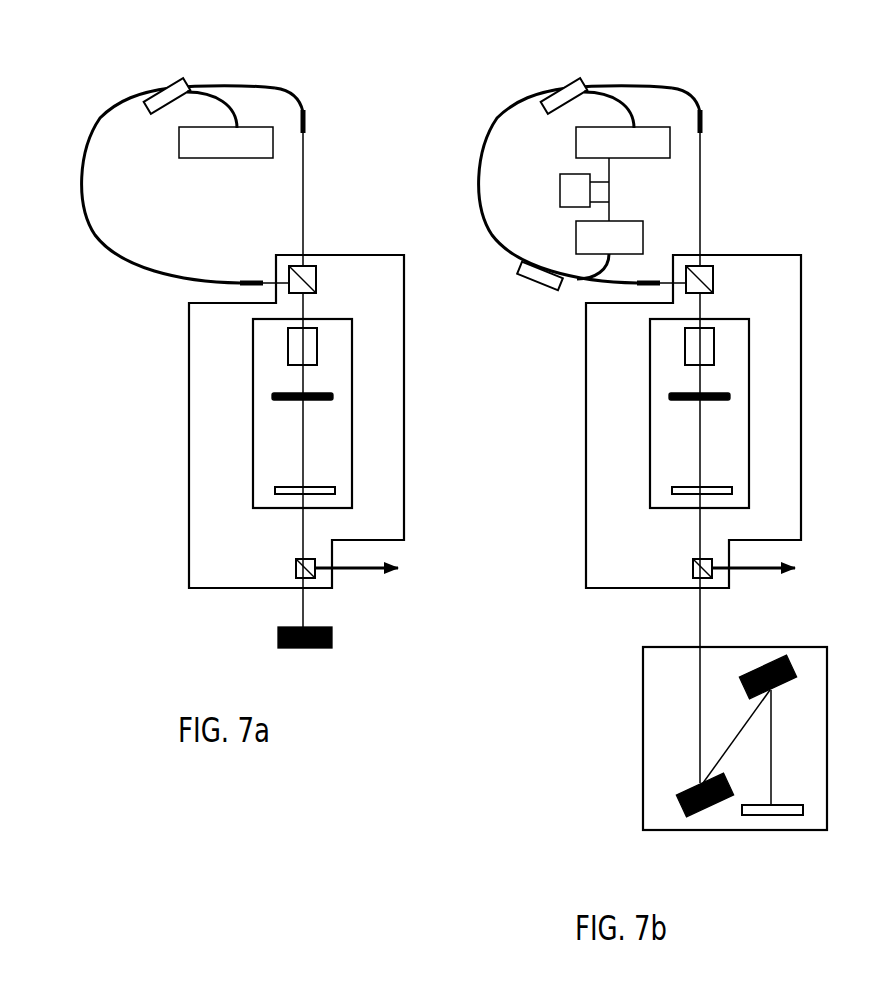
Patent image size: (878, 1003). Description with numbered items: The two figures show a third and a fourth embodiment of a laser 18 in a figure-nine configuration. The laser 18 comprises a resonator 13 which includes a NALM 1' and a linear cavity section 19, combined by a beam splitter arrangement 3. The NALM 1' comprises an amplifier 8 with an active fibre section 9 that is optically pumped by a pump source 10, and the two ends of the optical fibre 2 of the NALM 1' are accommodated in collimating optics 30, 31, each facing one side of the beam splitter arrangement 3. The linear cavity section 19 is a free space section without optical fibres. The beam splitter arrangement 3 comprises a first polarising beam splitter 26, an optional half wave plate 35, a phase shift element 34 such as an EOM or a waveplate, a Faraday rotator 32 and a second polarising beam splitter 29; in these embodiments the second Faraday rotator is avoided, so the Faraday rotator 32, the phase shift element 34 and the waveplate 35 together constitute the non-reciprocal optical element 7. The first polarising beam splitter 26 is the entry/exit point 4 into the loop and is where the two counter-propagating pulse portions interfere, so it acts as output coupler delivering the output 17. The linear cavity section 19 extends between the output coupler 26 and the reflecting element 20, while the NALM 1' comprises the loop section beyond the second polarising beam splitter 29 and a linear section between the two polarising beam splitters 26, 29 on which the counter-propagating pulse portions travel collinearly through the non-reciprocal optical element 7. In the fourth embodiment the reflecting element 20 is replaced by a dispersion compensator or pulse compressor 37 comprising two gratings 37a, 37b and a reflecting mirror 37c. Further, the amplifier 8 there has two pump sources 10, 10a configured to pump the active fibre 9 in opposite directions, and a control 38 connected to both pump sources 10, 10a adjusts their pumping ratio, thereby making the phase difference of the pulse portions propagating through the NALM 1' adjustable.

In FIG. 7a, the NALM 1' is at (56, 125).
In FIG. 7b, the NALM 1' is at (453, 125).
In FIG. 7a, the optical fibre 2 is at (278, 87).
In FIG. 7b, the optical fibre 2 is at (675, 87).
In FIG. 7a, the beam splitter arrangement 3 is at (405, 262).
In FIG. 7b, the beam splitter arrangement 3 is at (802, 262).
In FIG. 7a, the entry/exit point 4 is at (320, 545).
In FIG. 7b, the entry/exit point 4 is at (717, 545).
In FIG. 7a, the non-reciprocal optical element 7 is at (347, 365).
In FIG. 7b, the non-reciprocal optical element 7 is at (744, 365).
In FIG. 7a, the amplifier 8 is at (152, 78).
In FIG. 7b, the amplifier 8 is at (549, 78).
In FIG. 7a, the active fibre section 9 is at (117, 118).
In FIG. 7b, the active fibre section 9 is at (514, 118).
In FIG. 7a, the pump source 10 is at (247, 153).
In FIG. 7b, the pump source 10 is at (644, 153).
In FIG. 7b, the second pump source 10a is at (640, 237).
In FIG. 7a, the resonator 13 is at (302, 389).
In FIG. 7b, the resonator 13 is at (699, 389).
In FIG. 7a, the output laser beam 17 is at (358, 573).
In FIG. 7b, the output laser beam 17 is at (755, 573).
In FIG. 7a, the laser 18 is at (136, 413).
In FIG. 7b, the laser 18 is at (533, 413).
In FIG. 7a, the linear cavity section 19 is at (302, 602).
In FIG. 7b, the linear cavity section 19 is at (699, 602).
In FIG. 7a, the reflecting element 20 is at (333, 636).
In FIG. 7a, the first polarising beam splitter 26 is at (296, 570).
In FIG. 7b, the first polarising beam splitter 26 is at (693, 570).
In FIG. 7a, the second polarising beam splitter 29 is at (314, 275).
In FIG. 7b, the second polarising beam splitter 29 is at (711, 275).
In FIG. 7b, the collimating optics 30 is at (640, 288).
In FIG. 7b, the collimating optics 31 is at (703, 122).
In FIG. 7a, the second Faraday rotator 32 is at (287, 347).
In FIG. 7b, the second Faraday rotator 32 is at (684, 347).
In FIG. 7a, the phase shift element 34 is at (272, 396).
In FIG. 7b, the phase shift element 34 is at (669, 396).
In FIG. 7a, the half wave plate 35 is at (277, 488).
In FIG. 7b, the half wave plate 35 is at (674, 488).
In FIG. 7b, the dispersion compensator 37 is at (705, 749).
In FIG. 7b, the grating 37a is at (680, 797).
In FIG. 7b, the grating 37b is at (757, 667).
In FIG. 7b, the reflecting mirror 37c is at (767, 817).
In FIG. 7b, the control 38 is at (567, 192).